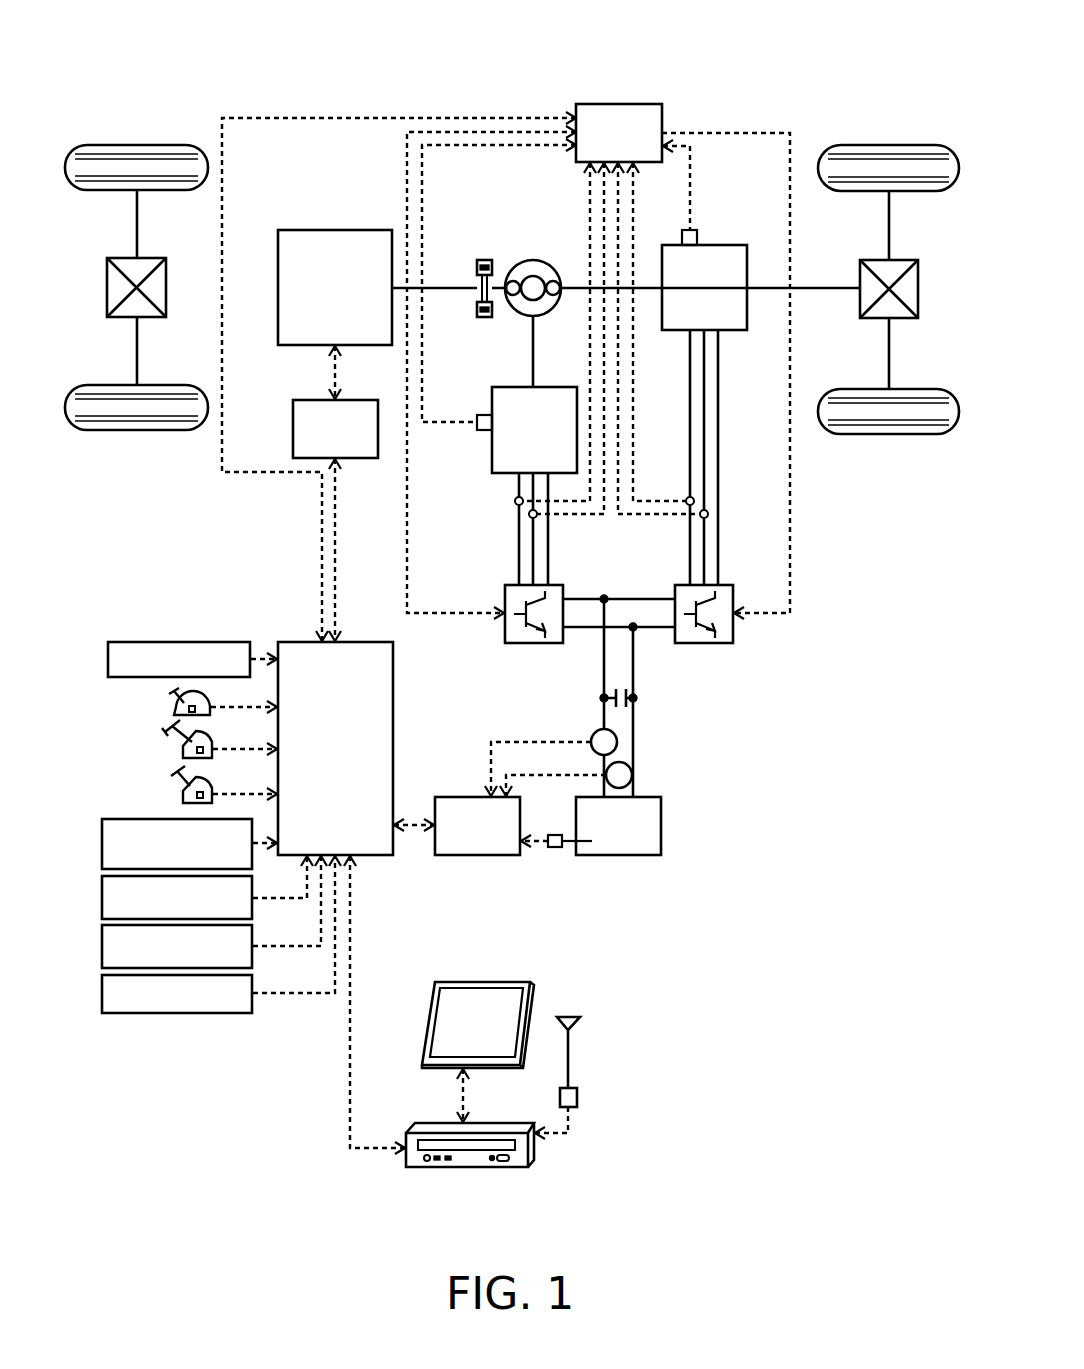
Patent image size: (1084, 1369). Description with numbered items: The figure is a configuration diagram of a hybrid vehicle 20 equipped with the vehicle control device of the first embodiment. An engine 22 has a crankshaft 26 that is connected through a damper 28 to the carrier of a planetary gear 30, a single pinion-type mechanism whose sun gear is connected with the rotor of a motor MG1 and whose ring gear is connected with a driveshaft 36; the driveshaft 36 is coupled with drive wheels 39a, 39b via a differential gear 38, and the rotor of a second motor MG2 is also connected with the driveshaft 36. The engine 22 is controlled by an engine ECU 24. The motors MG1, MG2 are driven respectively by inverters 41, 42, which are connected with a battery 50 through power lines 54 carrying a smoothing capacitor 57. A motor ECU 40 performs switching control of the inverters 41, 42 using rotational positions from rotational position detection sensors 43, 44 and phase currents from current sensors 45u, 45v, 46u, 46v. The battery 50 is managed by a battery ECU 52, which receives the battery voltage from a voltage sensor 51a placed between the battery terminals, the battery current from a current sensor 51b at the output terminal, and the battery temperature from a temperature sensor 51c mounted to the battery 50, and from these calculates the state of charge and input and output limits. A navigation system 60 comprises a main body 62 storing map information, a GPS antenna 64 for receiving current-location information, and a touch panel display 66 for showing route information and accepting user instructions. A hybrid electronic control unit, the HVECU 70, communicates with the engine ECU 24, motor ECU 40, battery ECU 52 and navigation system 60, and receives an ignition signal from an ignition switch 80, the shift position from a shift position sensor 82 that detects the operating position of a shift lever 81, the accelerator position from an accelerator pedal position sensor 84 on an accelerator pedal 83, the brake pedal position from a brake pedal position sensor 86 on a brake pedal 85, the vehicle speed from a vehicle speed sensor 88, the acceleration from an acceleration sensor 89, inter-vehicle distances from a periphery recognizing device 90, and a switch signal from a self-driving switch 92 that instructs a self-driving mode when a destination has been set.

The hybrid vehicle 20 is at (733, 75).
The engine 22 is at (362, 230).
The engine ECU 24 is at (360, 400).
The crankshaft 26 is at (442, 288).
The damper 28 is at (485, 260).
The planetary gear 30 is at (533, 260).
The driveshaft 36 is at (828, 289).
The differential gear 38 is at (899, 260).
The drive wheel 39a is at (884, 145).
The drive wheel 39b is at (885, 434).
The motor ECU 40 is at (620, 104).
The inverter 41 is at (558, 585).
The inverter 42 is at (728, 585).
The rotational position detection sensor 43 is at (485, 432).
The rotational position detection sensor 44 is at (688, 230).
The current sensor 45u is at (515, 501).
The current sensor 45v is at (529, 514).
The current sensor 46u is at (694, 501).
The current sensor 46v is at (708, 514).
The battery 50 is at (661, 824).
The voltage sensor 51a is at (633, 775).
The current sensor 51b is at (618, 742).
The temperature sensor 51c is at (553, 848).
The battery ECU 52 is at (462, 797).
The power lines 54 is at (633, 672).
The capacitor 57 is at (640, 697).
The navigation system 60 is at (393, 1010).
The main body 62 is at (476, 1167).
The GPS antenna 64 is at (578, 1097).
The touch panel display 66 is at (478, 982).
The HVECU 70 is at (363, 642).
The ignition switch 80 is at (108, 657).
The shift lever 81 is at (168, 697).
The shift position sensor 82 is at (172, 709).
The accelerator pedal 83 is at (165, 735).
The accelerator pedal position sensor 84 is at (183, 750).
The brake pedal 85 is at (173, 785).
The brake pedal position sensor 86 is at (180, 796).
The vehicle speed sensor 88 is at (102, 845).
The acceleration sensor 89 is at (102, 896).
The periphery recognizing device 90 is at (102, 946).
The self-driving switch 92 is at (102, 995).
The motor MG1 is at (510, 387).
The motor MG2 is at (722, 245).